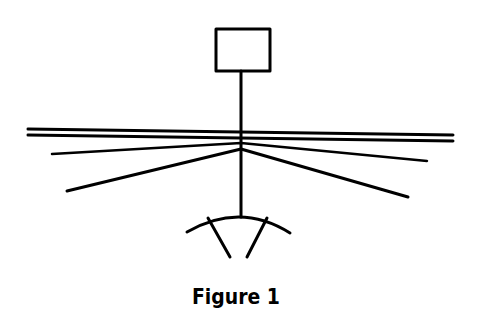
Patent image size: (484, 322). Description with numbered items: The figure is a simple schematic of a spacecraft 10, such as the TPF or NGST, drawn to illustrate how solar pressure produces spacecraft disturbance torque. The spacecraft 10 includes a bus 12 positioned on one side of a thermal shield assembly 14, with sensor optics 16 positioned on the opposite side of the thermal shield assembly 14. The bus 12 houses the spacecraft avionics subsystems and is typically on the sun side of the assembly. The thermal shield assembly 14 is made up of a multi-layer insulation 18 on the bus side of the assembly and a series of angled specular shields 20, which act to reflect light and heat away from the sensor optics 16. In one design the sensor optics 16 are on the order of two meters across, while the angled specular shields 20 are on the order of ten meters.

The spacecraft 10 is at (357, 72).
The bus 12 is at (216, 57).
The thermal shield assembly 14 is at (307, 170).
The sensor optics 16 is at (260, 233).
The multi-layer insulation 18 is at (50, 137).
The angled specular shields 20 is at (138, 177).